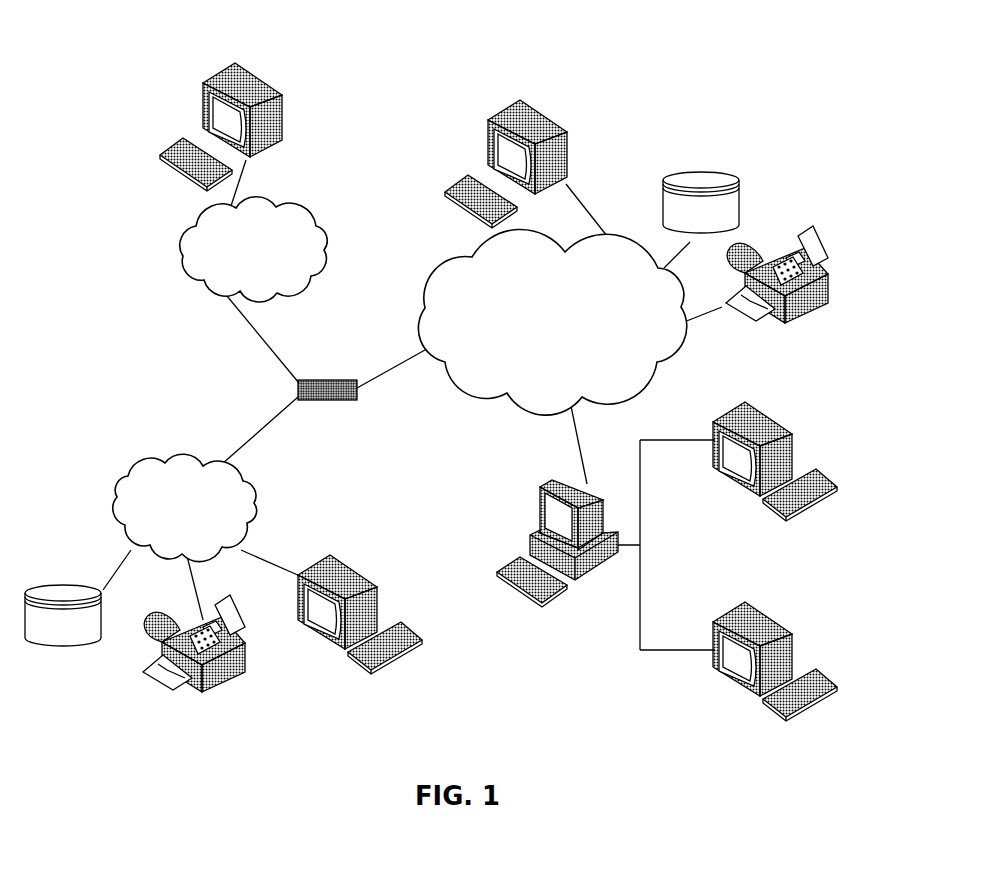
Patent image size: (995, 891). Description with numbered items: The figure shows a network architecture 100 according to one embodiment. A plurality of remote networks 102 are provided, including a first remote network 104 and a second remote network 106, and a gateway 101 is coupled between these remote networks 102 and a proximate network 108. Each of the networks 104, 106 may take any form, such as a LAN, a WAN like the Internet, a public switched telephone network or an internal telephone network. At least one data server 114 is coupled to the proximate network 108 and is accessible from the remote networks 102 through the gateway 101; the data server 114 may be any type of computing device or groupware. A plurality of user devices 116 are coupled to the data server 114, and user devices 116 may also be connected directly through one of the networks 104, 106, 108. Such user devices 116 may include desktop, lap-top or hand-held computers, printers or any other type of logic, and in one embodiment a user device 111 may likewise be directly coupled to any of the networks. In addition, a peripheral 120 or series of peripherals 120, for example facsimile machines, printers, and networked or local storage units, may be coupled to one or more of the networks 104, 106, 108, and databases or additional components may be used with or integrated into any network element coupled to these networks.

The architecture 100 is at (138, 47).
The gateway 101 is at (312, 380).
The remote networks 102 is at (152, 310).
The first remote network 104 is at (116, 479).
The second remote network 106 is at (318, 222).
The proximate network 108 is at (652, 383).
The user device 111 is at (566, 132).
The data server 114 is at (540, 501).
The user devices 116 is at (284, 101).
The peripheral 120 is at (64, 645).